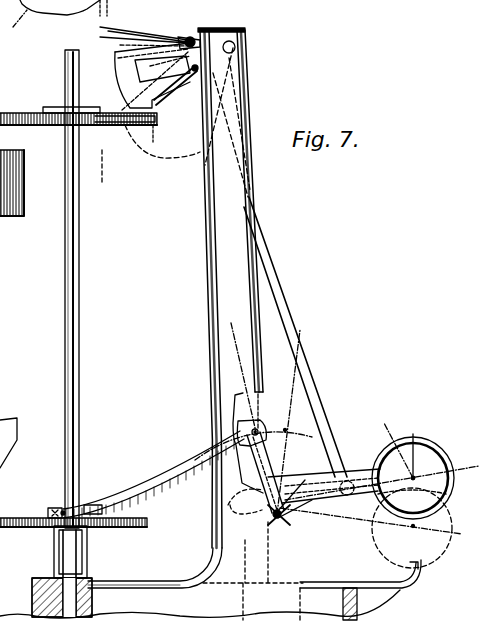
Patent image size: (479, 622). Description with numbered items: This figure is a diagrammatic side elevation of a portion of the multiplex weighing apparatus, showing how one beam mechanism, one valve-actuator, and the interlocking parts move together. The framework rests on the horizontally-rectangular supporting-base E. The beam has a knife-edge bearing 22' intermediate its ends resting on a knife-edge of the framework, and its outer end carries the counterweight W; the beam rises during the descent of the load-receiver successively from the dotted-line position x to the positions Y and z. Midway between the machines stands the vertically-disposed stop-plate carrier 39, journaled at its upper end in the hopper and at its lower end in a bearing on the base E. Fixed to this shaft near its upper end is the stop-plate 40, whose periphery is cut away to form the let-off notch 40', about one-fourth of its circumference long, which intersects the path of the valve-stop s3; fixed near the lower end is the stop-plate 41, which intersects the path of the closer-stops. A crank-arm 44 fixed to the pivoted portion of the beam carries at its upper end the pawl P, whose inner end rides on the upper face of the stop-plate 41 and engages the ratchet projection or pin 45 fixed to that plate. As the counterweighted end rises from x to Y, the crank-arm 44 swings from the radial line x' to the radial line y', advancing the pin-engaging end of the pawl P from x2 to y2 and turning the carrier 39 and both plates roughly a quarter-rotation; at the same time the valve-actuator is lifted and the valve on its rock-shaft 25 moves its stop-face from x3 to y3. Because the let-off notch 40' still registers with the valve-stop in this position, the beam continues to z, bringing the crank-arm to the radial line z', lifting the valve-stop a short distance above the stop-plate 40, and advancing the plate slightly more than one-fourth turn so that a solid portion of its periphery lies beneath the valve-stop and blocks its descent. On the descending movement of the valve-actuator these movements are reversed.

The stop-plate 40 is at (78, 118).
The stop-plate carrier 39 is at (79, 380).
The valve-stop s3 is at (129, 83).
The valve-stop position y3 is at (188, 37).
The valve-stop position x3 is at (196, 68).
The let-off notch 40' is at (150, 165).
The rock-shaft 25 is at (236, 46).
The radial line z' is at (225, 375).
The radial line y' is at (260, 371).
The radial line x' is at (303, 416).
The crank-arm 44 is at (268, 472).
The knife-edge bearing 22' is at (291, 523).
The beam position x is at (371, 528).
The counterweight W is at (422, 455).
The beam position z is at (400, 449).
The beam position Y is at (430, 470).
The supporting-base E is at (141, 593).
The stop-plate 41 is at (83, 526).
The ratchet projection or pin 45 is at (48, 514).
The pawl end position y2 is at (60, 510).
The pawl end position x2 is at (95, 506).
The pawl P is at (165, 467).